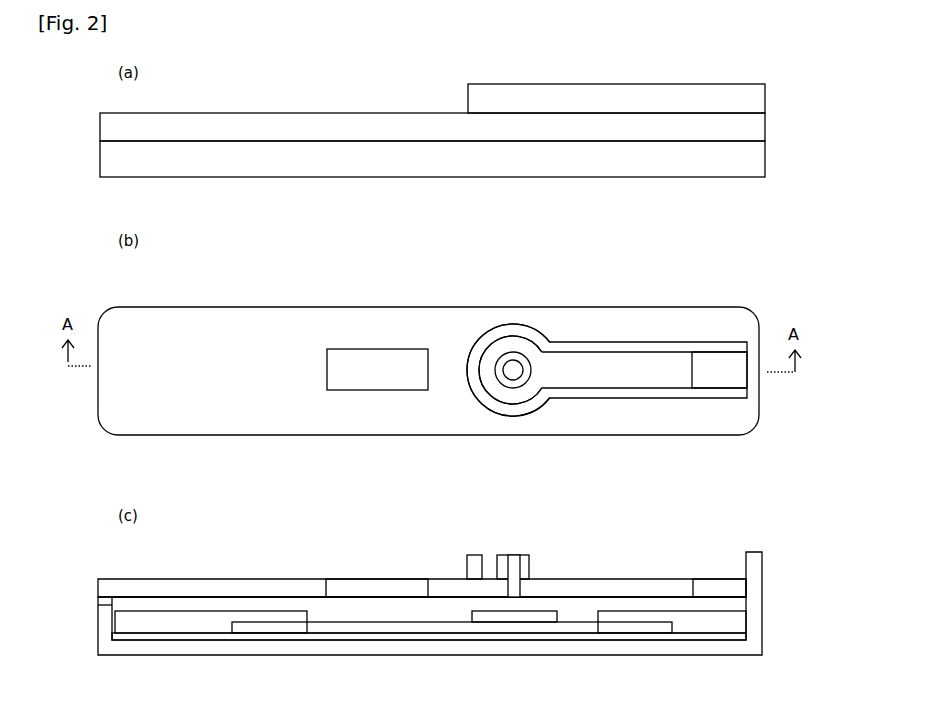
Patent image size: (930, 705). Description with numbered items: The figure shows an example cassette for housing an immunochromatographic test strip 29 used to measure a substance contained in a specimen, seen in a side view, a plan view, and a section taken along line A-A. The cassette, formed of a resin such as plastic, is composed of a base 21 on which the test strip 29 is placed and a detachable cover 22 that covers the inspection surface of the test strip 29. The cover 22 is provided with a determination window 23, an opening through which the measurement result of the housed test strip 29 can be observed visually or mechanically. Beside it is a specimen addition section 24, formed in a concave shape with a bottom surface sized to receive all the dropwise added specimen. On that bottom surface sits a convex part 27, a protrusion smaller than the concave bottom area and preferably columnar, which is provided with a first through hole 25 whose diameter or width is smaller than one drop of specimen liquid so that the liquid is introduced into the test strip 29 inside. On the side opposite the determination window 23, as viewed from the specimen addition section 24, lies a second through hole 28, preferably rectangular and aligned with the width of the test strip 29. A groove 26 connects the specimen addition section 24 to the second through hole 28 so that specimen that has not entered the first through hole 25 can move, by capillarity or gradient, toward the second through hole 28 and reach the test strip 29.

The base 21 is at (345, 166).
The cover 22 is at (375, 130).
The determination window 23 is at (385, 358).
The specimen addition section 24 is at (493, 338).
The first through hole 25 is at (518, 365).
The groove 26 is at (612, 367).
The convex part 27 is at (530, 390).
The second through hole 28 is at (718, 363).
The immunochromatographic test strip 29 is at (365, 628).